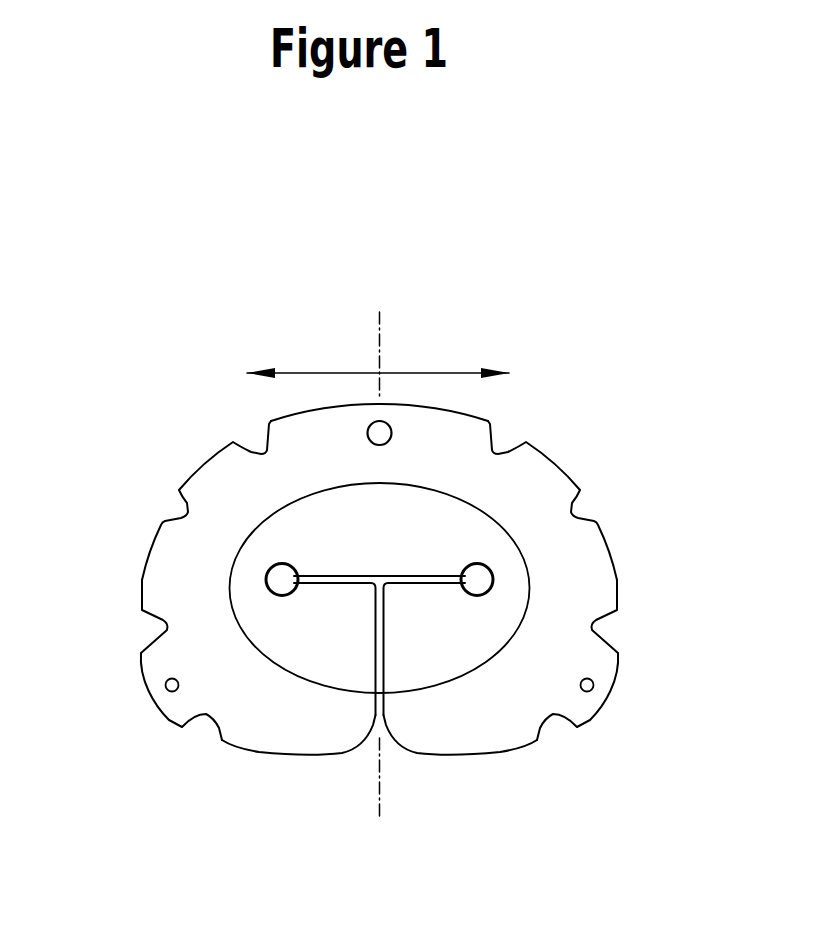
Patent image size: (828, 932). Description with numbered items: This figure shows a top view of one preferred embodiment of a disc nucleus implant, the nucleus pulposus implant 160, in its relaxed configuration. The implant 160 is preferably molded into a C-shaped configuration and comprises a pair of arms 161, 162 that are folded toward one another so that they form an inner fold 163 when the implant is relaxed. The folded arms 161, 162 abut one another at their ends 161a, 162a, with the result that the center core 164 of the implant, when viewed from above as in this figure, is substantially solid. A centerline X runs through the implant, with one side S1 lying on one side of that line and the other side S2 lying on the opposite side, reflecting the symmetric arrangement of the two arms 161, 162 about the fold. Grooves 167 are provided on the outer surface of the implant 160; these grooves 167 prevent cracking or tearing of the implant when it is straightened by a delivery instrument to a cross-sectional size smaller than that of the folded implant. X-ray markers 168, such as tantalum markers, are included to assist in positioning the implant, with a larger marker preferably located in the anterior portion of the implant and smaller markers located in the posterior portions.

The nucleus pulposus implant 160 is at (128, 420).
The arm 161 is at (500, 700).
The end of arm 161a is at (410, 717).
The arm 162 is at (267, 700).
The end of arm 162a is at (330, 723).
The inner fold 163 is at (329, 575).
The center core 164 is at (530, 593).
The grooves 167 is at (527, 412).
The x-ray markers 168 is at (165, 687).
The axis of symmetry X is at (380, 333).
The first side S1 is at (368, 334).
The second side S2 is at (539, 323).